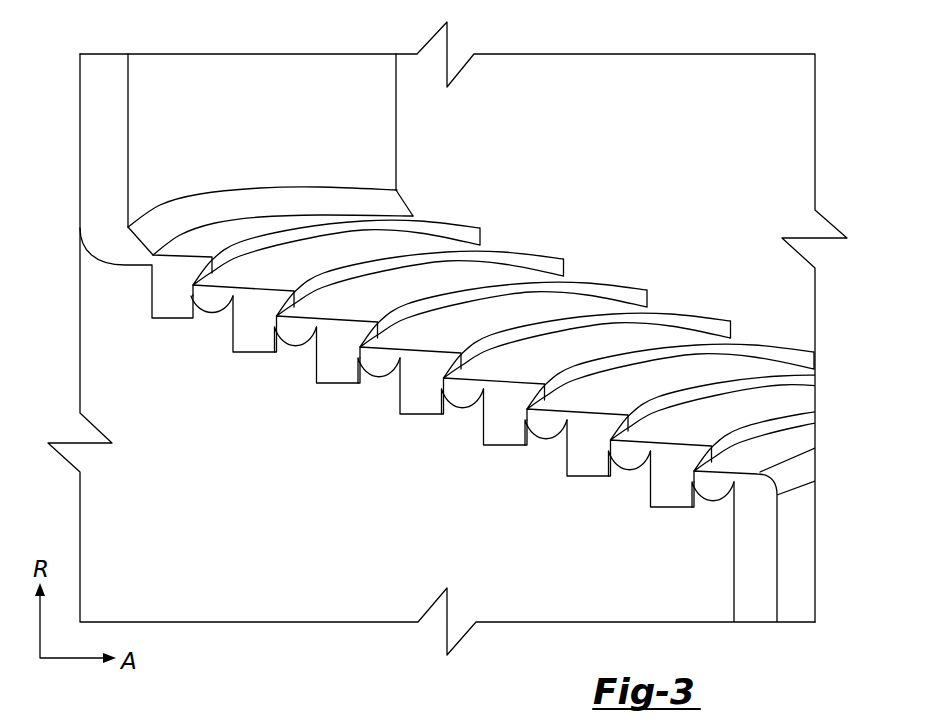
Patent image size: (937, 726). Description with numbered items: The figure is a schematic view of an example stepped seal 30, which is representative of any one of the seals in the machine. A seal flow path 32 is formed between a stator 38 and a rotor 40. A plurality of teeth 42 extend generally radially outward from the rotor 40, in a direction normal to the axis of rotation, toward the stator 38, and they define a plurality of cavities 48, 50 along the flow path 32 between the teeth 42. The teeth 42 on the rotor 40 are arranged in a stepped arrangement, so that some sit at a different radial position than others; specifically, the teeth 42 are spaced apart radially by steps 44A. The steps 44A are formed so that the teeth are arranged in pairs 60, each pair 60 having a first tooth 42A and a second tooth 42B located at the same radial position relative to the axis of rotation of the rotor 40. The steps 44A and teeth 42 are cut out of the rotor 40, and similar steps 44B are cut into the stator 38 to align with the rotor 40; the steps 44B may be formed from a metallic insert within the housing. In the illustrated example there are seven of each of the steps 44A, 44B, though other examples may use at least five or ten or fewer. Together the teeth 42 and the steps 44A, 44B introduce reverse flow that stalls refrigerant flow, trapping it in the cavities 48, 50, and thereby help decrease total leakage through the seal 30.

The stepped seal 30 is at (559, 38).
The seal flow path 32 is at (167, 295).
The stator 38 is at (703, 83).
The rotor 40 is at (256, 607).
The teeth 42 is at (268, 348).
The first tooth 42A is at (432, 410).
The second tooth 42B is at (470, 416).
The steps 44A is at (235, 337).
The steps 44B is at (303, 291).
The cavity 48 is at (292, 350).
The cavity 50 is at (338, 369).
The pair 60 is at (568, 477).